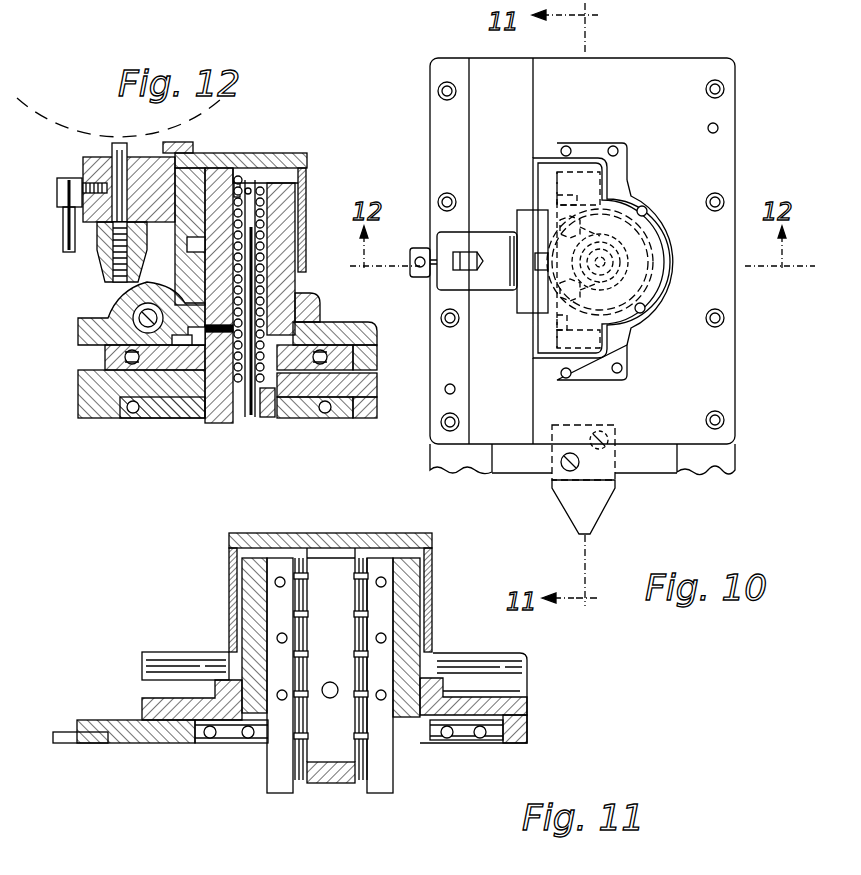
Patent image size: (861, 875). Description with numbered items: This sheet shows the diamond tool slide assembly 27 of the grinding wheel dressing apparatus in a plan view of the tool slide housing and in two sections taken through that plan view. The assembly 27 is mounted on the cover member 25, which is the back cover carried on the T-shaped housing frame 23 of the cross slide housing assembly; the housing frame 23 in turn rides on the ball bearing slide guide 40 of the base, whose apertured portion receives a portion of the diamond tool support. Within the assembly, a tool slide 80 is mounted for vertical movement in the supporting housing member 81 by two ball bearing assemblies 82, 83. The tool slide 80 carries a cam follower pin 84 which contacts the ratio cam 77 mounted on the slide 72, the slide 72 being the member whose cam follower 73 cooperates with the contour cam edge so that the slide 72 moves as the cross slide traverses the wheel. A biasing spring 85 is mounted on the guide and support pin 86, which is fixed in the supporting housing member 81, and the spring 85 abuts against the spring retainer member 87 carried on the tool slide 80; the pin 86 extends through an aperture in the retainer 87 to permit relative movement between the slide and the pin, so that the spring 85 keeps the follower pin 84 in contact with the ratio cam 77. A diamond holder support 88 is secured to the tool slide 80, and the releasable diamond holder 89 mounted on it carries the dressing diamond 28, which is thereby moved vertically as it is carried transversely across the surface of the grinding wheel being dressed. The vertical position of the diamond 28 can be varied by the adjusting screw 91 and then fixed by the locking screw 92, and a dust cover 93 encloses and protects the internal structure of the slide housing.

In FIG. 12, the housing frame 23 is at (377, 400).
In FIG. 12, the cover member 25 is at (377, 347).
In FIG. 10, the cover member 25 is at (720, 350).
In FIG. 10, the diamond tool slide assembly 27 is at (655, 290).
In FIG. 12, the dressing diamond 28 is at (118, 140).
In FIG. 10, the dressing diamond 28 is at (469, 252).
In FIG. 12, the ball bearing slide guide 40 is at (288, 418).
In FIG. 10, the slide 72 is at (668, 470).
In FIG. 11, the slide 72 is at (138, 743).
In FIG. 10, the cam follower 73 is at (590, 513).
In FIG. 11, the cam follower 73 is at (68, 743).
In FIG. 12, the ratio cam 77 is at (197, 347).
In FIG. 12, the tool slide 80 is at (220, 173).
In FIG. 10, the tool slide 80 is at (563, 270).
In FIG. 11, the tool slide 80 is at (327, 558).
In FIG. 12, the supporting housing member 81 is at (290, 283).
In FIG. 10, the supporting housing member 81 is at (563, 337).
In FIG. 11, the supporting housing member 81 is at (413, 578).
In FIG. 11, the ball bearing assembly 82 is at (362, 553).
In FIG. 11, the ball bearing assembly 83 is at (297, 553).
In FIG. 12, the cam follower pin 84 is at (220, 423).
In FIG. 11, the cam follower pin 84 is at (330, 698).
In FIG. 12, the biasing spring 85 is at (262, 216).
In FIG. 10, the biasing spring 85 is at (606, 256).
In FIG. 12, the guide and support pin 86 is at (257, 223).
In FIG. 12, the spring retainer member 87 is at (267, 414).
In FIG. 11, the spring retainer member 87 is at (345, 783).
In FIG. 12, the diamond holder support 88 is at (280, 157).
In FIG. 12, the releasable diamond holder 89 is at (140, 163).
In FIG. 10, the releasable diamond holder 89 is at (490, 280).
In FIG. 12, the adjusting screw 91 is at (100, 280).
In FIG. 12, the locking screw 92 is at (63, 223).
In FIG. 10, the locking screw 92 is at (418, 278).
In FIG. 12, the dust cover 93 is at (307, 173).
In FIG. 11, the dust cover 93 is at (430, 545).